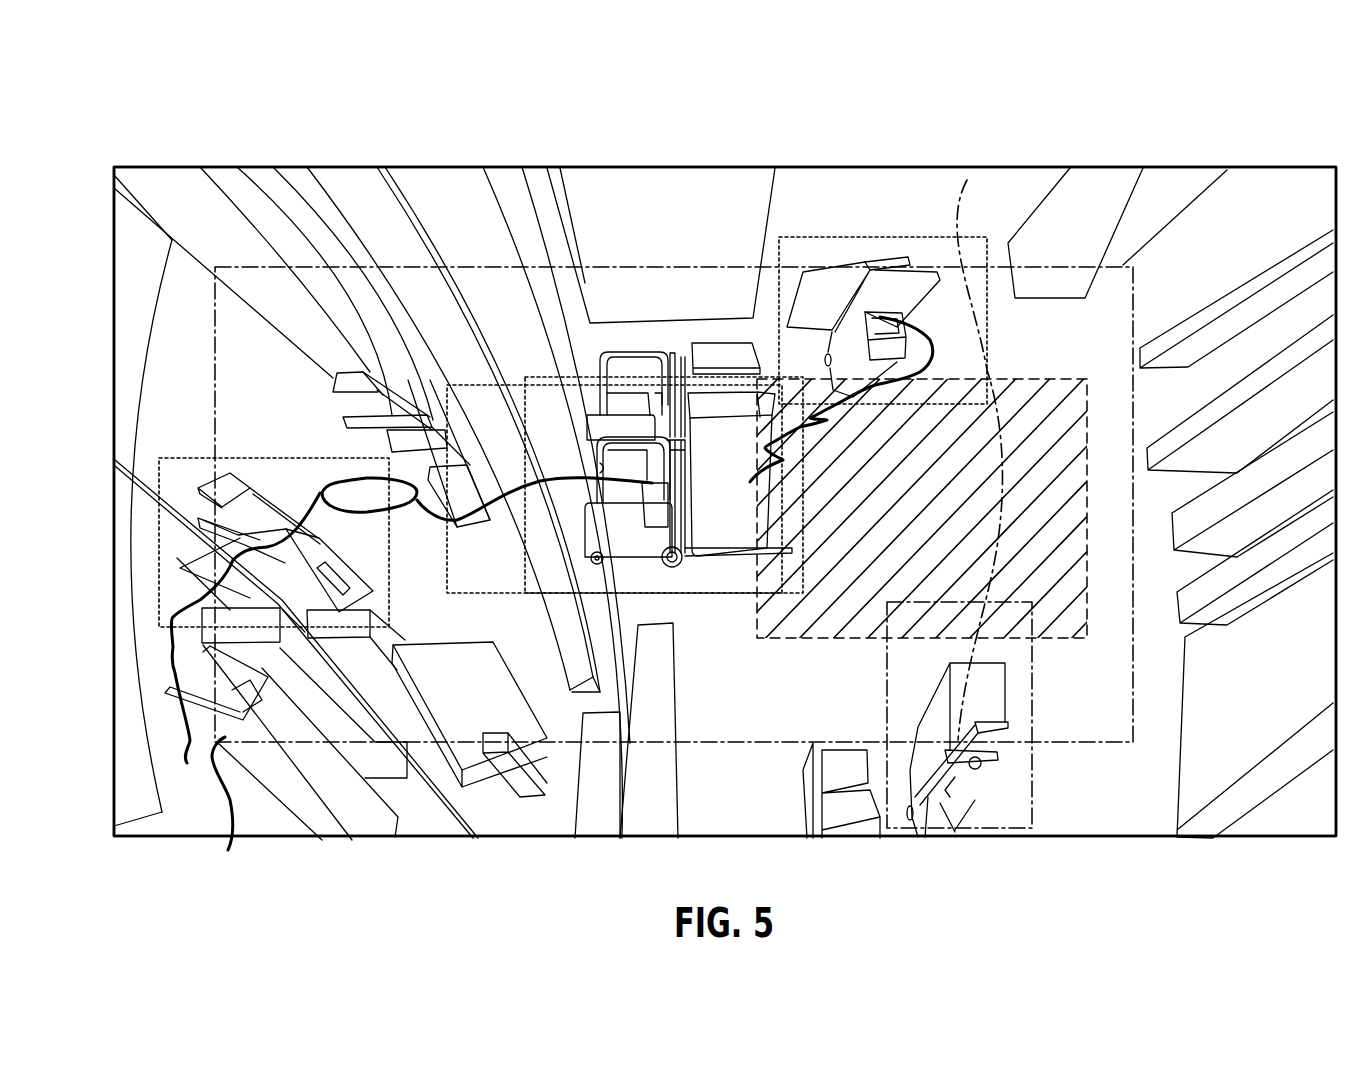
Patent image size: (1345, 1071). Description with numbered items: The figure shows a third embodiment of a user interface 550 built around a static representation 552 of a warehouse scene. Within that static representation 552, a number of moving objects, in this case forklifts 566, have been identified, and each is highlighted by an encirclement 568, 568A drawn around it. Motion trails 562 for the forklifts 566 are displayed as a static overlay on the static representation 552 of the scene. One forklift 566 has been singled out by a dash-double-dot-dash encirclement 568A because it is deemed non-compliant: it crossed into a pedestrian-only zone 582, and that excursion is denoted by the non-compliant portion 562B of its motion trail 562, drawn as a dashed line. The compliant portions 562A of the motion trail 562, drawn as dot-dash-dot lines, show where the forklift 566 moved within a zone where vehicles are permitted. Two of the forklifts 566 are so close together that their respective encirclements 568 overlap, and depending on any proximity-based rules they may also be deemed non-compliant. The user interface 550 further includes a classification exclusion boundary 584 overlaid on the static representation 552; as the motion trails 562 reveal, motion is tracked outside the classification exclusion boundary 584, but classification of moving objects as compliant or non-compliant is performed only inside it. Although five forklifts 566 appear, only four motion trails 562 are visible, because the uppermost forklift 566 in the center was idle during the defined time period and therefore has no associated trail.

The user interface 550 is at (148, 137).
The static representation 552 is at (346, 163).
The motion trail 562 is at (166, 652).
The compliant portion 562A is at (967, 180).
The non-compliant portion 562B is at (1000, 550).
The forklift 566 is at (880, 274).
The encirclement 568 is at (812, 237).
The dash-double-dot-dash encirclement 568A is at (883, 677).
The pedestrian-only zone 582 is at (1087, 461).
The classification exclusion boundary 584 is at (233, 845).